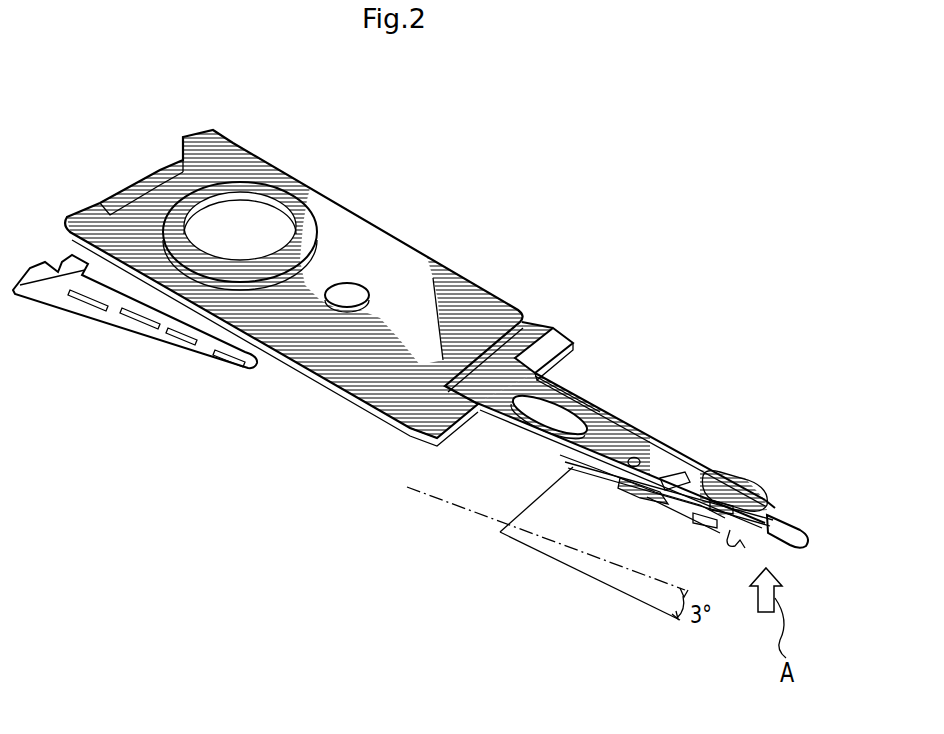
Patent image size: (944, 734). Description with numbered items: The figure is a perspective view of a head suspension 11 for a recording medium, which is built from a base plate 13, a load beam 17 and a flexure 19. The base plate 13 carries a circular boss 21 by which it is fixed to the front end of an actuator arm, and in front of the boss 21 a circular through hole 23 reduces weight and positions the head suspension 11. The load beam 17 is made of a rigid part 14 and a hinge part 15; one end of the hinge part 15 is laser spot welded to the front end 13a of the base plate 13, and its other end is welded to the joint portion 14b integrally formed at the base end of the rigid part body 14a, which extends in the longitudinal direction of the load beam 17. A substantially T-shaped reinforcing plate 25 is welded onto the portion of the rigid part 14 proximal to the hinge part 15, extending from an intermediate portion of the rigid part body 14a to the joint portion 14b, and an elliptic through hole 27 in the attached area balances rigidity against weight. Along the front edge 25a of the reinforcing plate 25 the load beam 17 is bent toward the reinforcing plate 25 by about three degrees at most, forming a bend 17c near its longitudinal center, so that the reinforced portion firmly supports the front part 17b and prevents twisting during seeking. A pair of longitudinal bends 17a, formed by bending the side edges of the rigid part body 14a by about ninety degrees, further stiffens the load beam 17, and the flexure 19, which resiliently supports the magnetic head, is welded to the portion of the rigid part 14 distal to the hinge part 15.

The head suspension 11 is at (580, 142).
The base plate 13 is at (355, 225).
The front end of the base plate 13a is at (500, 318).
The rigid part 14 is at (700, 445).
The rigid part body 14a is at (700, 470).
The joint portion 14b is at (425, 437).
The hinge part 15 is at (528, 345).
The load beam 17 is at (643, 450).
The longitudinal bends 17a is at (648, 458).
The front part of the load beam 17b is at (750, 513).
The bend 17c is at (575, 470).
The flexure 19 is at (190, 355).
The boss 21 is at (255, 190).
The through hole 23 is at (352, 283).
The reinforcing plate 25 is at (560, 378).
The front edge of the reinforcing plate 25a is at (533, 447).
The through hole 27 is at (580, 395).